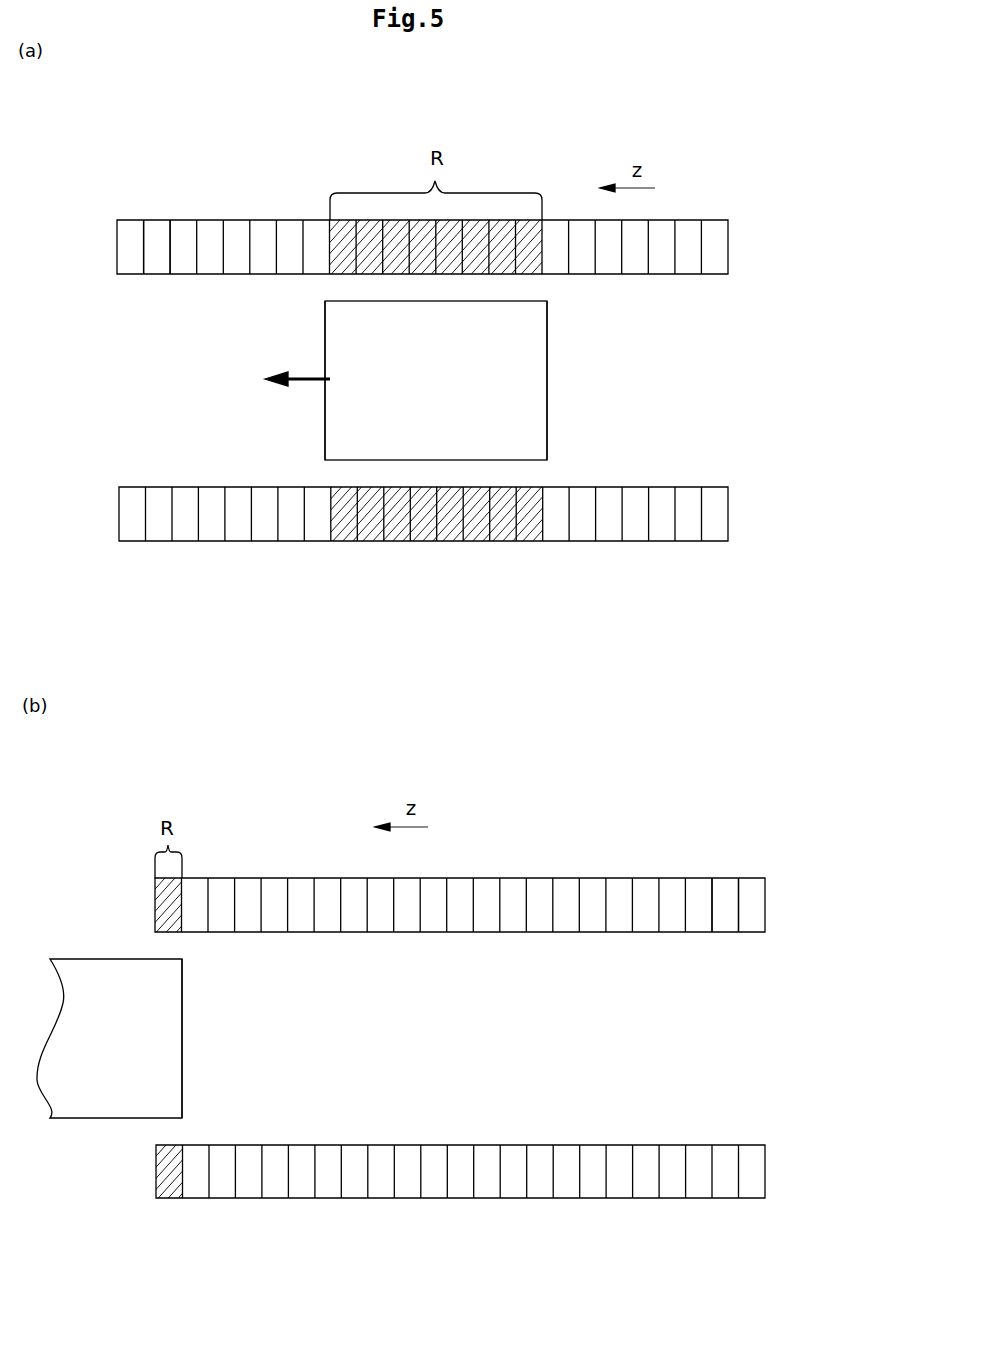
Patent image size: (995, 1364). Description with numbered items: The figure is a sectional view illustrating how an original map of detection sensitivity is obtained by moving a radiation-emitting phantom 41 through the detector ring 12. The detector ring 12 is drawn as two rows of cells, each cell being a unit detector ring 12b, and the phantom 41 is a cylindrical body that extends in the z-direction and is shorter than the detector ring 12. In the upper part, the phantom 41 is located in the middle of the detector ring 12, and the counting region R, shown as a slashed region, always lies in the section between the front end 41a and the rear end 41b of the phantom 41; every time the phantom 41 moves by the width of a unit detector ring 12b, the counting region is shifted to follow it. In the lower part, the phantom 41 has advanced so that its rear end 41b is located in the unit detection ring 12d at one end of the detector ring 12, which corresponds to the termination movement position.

The detector ring 12 is at (120, 553).
The unit detector ring 12b is at (207, 197).
The unit detection ring 12d is at (155, 897).
The phantom 41 is at (444, 405).
The front end 41a is at (325, 442).
The rear end 41b is at (546, 376).